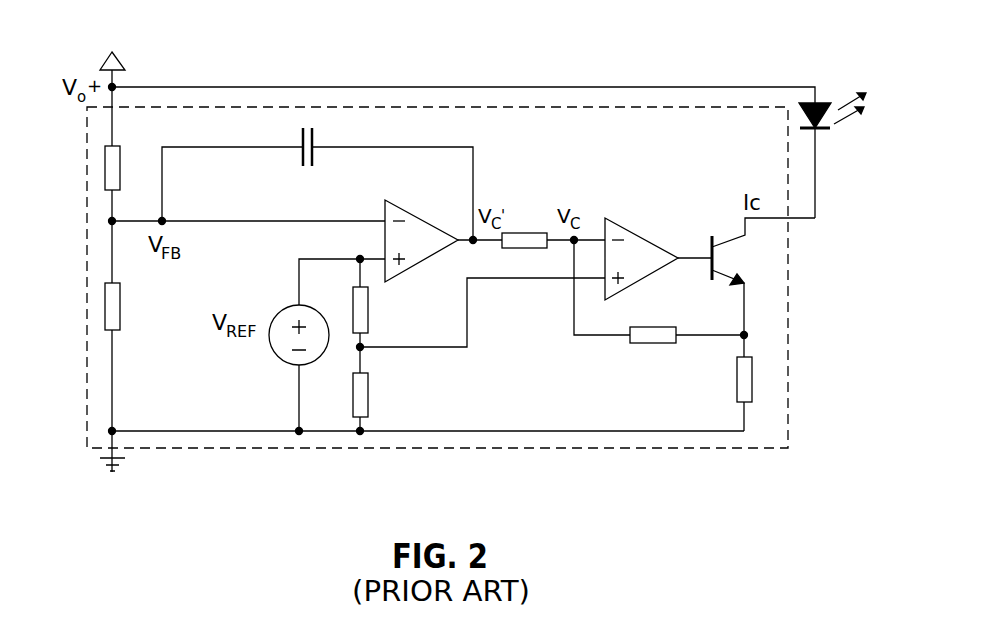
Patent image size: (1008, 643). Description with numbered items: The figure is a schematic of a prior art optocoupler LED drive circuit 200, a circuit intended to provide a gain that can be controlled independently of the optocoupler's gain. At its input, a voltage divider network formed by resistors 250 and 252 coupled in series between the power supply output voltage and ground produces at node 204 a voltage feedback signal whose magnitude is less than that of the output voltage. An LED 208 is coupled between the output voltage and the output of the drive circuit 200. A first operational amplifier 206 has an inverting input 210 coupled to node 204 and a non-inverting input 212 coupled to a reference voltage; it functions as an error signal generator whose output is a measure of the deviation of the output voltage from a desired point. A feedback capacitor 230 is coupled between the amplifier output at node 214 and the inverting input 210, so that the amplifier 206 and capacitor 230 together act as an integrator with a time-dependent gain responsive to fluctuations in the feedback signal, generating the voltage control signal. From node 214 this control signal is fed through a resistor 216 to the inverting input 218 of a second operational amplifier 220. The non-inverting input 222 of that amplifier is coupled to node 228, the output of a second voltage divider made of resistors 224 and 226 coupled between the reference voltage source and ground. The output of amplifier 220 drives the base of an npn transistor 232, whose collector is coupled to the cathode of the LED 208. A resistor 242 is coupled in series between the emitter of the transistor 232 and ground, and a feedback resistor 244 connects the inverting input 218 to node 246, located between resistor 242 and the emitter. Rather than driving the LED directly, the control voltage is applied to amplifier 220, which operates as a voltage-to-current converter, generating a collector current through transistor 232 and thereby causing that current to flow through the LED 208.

The LED drive circuit 200 is at (358, 107).
The node 204 is at (108, 224).
The first operational amplifier 206 is at (426, 217).
The LED 208 is at (818, 131).
The inverting input 210 is at (380, 219).
The non-inverting input 212 is at (381, 268).
The output node 214 is at (470, 244).
The resistor 216 is at (527, 232).
The inverting input 218 is at (590, 238).
The second operational amplifier 220 is at (641, 236).
The non-inverting input 222 is at (592, 280).
The resistor 224 is at (352, 301).
The resistor 226 is at (370, 390).
The node 228 is at (363, 350).
The feedback capacitor 230 is at (300, 158).
The npn transistor 232 is at (722, 247).
The resistor 242 is at (736, 375).
The feedback resistor 244 is at (637, 346).
The node 246 is at (748, 337).
The resistor 250 is at (105, 163).
The resistor 252 is at (105, 295).